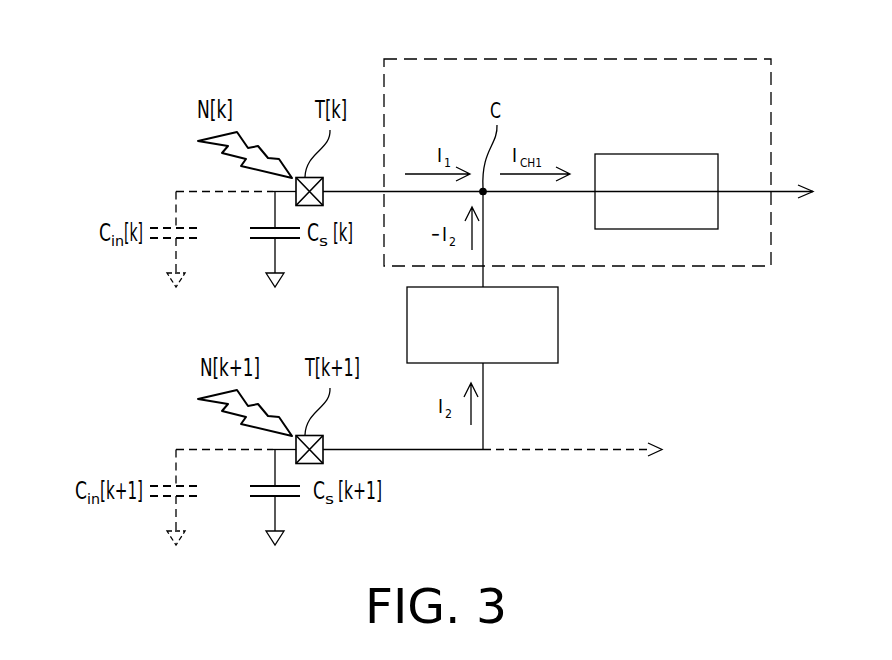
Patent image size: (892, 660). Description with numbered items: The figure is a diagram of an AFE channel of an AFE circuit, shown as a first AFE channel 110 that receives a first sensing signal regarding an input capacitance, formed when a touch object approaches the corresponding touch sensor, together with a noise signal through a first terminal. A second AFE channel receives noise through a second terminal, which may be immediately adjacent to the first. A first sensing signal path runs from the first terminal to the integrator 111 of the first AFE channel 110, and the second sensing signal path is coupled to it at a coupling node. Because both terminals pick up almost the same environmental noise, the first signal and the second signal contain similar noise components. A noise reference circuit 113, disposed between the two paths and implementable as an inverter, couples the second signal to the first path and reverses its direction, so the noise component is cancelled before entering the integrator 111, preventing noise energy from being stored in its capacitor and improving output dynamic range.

The first AFE channel 110 is at (702, 59).
The integrator 111 is at (657, 154).
The noise reference circuit 113 is at (558, 328).